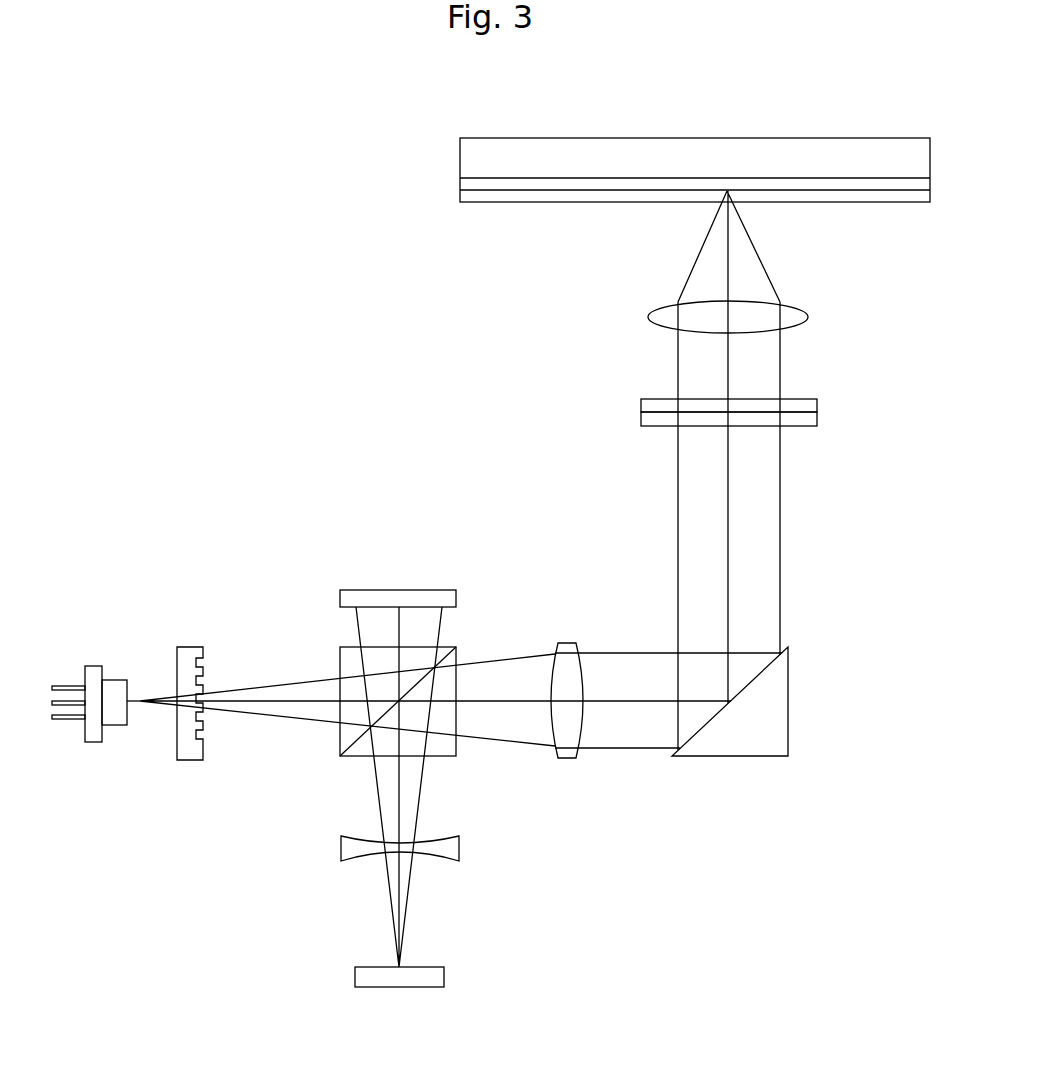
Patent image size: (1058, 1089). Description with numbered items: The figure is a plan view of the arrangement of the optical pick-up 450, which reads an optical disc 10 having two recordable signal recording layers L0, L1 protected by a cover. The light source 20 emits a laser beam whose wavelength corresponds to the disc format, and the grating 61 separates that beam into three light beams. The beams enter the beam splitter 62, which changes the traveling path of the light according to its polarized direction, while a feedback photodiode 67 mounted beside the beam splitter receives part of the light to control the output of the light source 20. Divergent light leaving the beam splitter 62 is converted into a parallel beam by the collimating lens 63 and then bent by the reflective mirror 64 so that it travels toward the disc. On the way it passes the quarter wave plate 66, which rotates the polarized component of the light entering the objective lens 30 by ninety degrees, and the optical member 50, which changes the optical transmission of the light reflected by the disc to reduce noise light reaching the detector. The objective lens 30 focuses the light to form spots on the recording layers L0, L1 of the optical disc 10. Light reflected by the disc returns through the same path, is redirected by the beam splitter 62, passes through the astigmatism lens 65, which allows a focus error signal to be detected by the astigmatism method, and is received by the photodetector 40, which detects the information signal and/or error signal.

The optical disc 10 is at (821, 140).
The signal recording layer L0 is at (478, 178).
The signal recording layer L1 is at (478, 190).
The light source 20 is at (92, 667).
The objective lens 30 is at (808, 316).
The photodetector 40 is at (444, 976).
The optical member 50 is at (816, 421).
The grating 61 is at (188, 649).
The beam splitter 62 is at (452, 758).
The collimating lens 63 is at (565, 647).
The reflective mirror 64 is at (790, 708).
The astigmatism lens 65 is at (459, 850).
The quarter wave plate 66 is at (811, 402).
The feedback photodiode 67 is at (456, 600).
The optical pick-up 450 is at (282, 395).